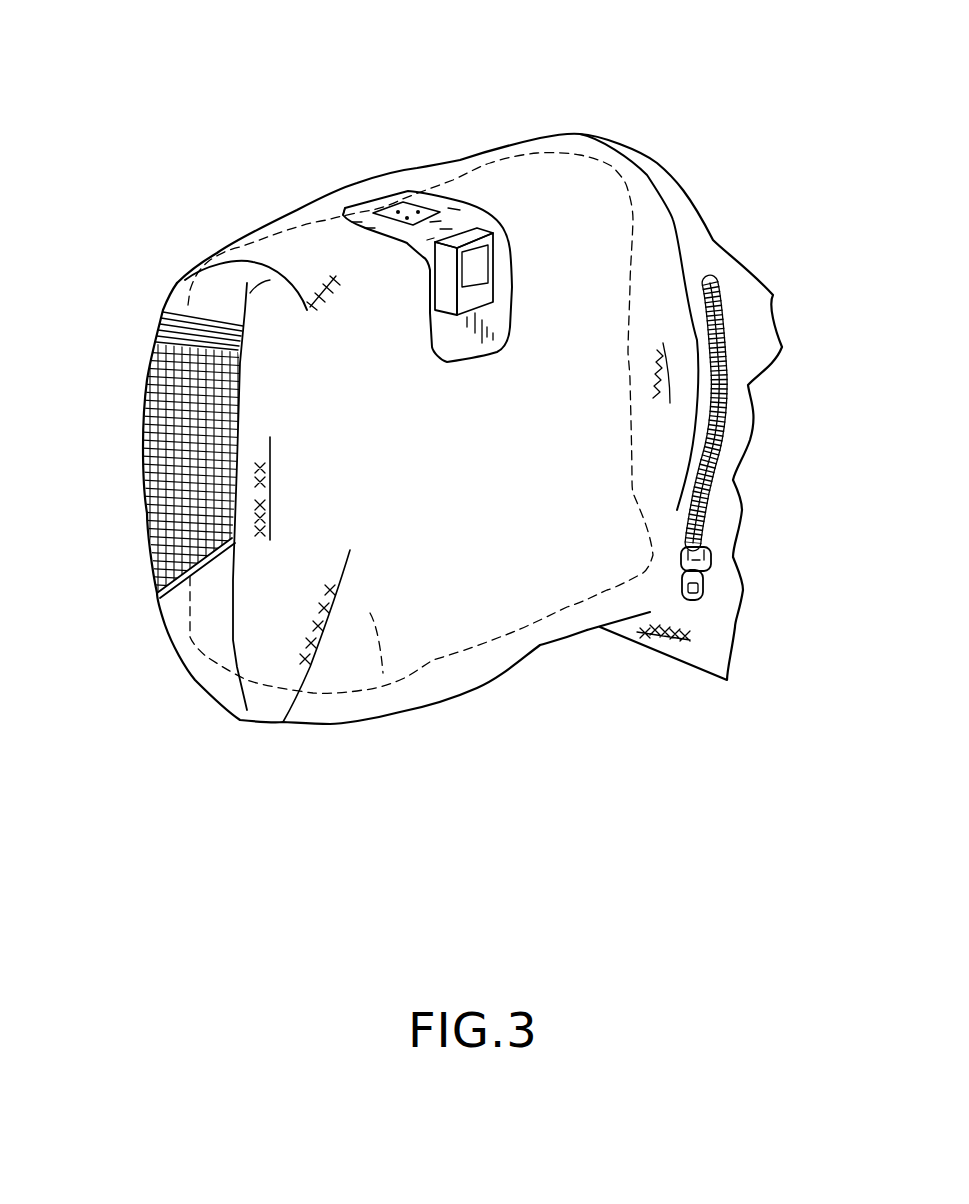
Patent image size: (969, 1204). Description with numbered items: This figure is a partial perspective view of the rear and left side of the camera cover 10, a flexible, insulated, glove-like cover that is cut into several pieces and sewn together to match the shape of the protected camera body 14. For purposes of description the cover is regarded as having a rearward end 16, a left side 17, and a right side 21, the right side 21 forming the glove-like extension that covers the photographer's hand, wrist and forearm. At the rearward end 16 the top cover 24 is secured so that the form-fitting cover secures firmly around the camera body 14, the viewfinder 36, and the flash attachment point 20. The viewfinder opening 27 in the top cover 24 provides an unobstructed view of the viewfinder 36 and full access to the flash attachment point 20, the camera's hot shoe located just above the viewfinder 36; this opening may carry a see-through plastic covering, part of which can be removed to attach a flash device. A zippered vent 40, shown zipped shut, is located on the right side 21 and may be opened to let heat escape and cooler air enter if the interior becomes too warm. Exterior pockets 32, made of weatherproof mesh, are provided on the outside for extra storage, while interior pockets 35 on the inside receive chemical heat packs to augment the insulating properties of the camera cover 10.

The camera cover 10 is at (236, 127).
The camera body 14 is at (577, 157).
The rearward end 16 is at (435, 707).
The left side 17 is at (230, 638).
The flash attachment point 20 is at (425, 205).
The right side 21 is at (723, 680).
The top cover 24 is at (297, 210).
The viewfinder opening 27 is at (398, 192).
The exterior pockets 32 is at (172, 477).
The interior pockets 35 is at (177, 347).
The viewfinder 36 is at (493, 262).
The zippered vent 40 is at (728, 383).